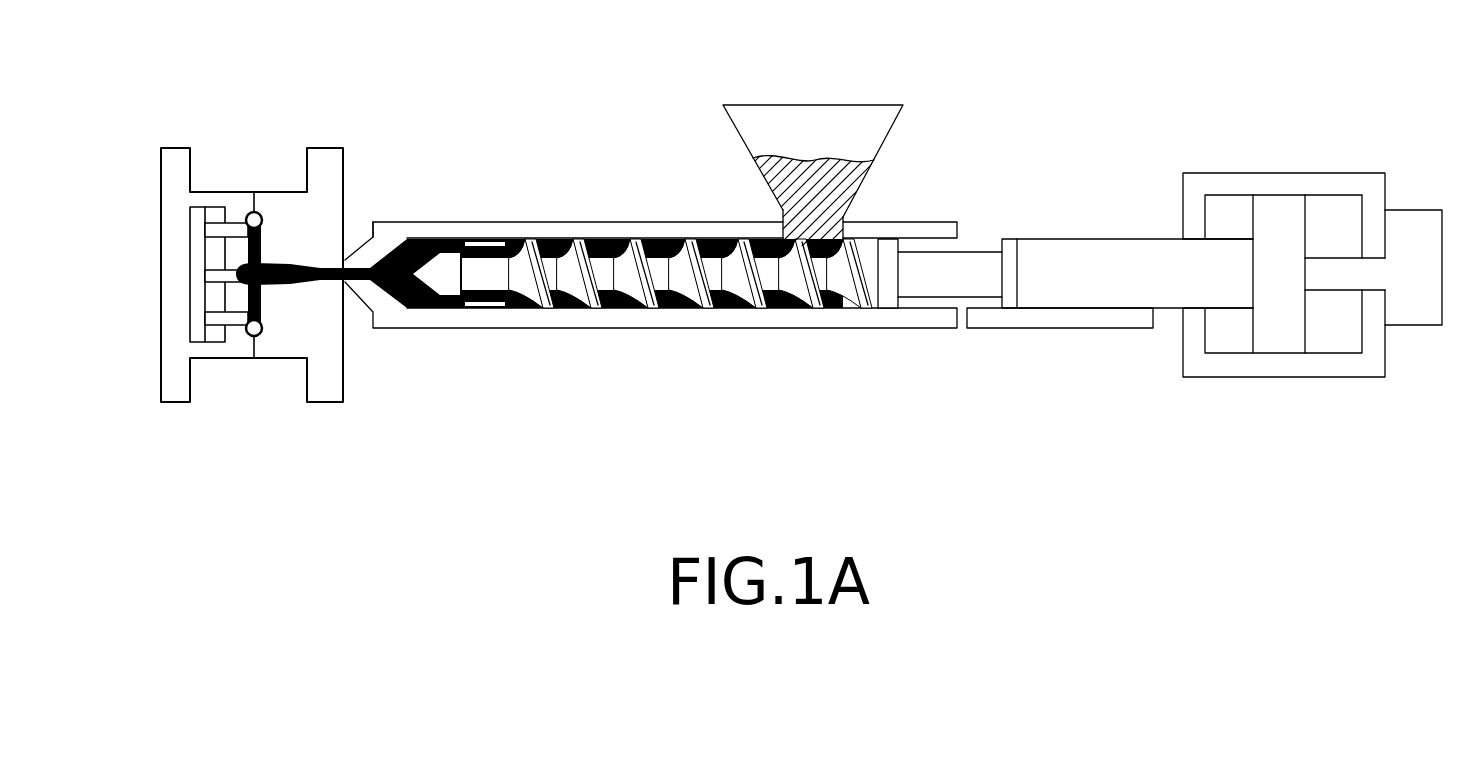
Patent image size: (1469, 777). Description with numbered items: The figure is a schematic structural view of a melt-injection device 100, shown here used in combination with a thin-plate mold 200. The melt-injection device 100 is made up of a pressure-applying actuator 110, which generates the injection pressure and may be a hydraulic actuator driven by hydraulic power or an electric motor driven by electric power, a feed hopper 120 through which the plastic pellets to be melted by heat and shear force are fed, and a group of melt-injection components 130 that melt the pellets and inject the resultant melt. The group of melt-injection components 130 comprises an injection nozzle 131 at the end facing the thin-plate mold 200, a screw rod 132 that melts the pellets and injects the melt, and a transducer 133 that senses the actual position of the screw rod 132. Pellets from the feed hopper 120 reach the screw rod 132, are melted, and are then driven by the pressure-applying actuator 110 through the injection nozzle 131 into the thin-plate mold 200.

The melt-injection device 100 is at (892, 289).
The pressure-applying actuator 110 is at (1238, 367).
The feed hopper 120 is at (823, 104).
The group of melt-injection components 130 is at (798, 309).
The injection nozzle 131 is at (400, 323).
The screw rod 132 is at (900, 262).
The transducer 133 is at (1103, 322).
The thin-plate mold 200 is at (303, 343).